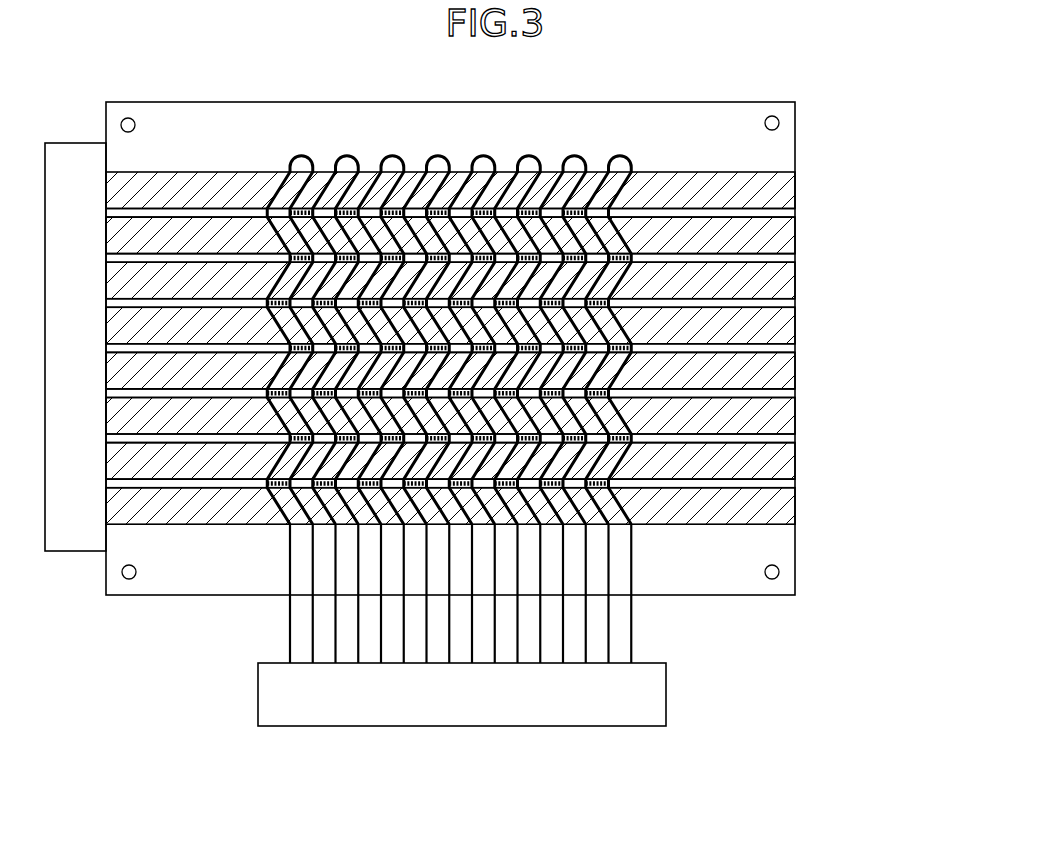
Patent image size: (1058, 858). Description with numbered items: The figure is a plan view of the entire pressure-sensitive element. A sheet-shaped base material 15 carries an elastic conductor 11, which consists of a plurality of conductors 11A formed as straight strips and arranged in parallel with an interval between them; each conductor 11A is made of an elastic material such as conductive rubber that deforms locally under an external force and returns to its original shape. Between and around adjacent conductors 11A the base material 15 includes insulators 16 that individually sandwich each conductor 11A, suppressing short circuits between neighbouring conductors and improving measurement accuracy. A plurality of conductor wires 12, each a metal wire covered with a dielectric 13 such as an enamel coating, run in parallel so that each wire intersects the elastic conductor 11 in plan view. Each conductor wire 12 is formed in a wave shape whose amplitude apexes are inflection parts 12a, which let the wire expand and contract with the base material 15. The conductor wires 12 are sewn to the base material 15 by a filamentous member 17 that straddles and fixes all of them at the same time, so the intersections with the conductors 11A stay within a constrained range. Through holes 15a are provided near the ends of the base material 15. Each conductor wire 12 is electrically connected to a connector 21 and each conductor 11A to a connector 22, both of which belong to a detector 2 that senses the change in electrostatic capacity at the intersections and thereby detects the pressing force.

The detector 2 is at (355, 491).
The elastic conductor 11 is at (535, 348).
The conductor 11A is at (786, 194).
The conductor wire 12 is at (421, 358).
The inflection part 12a is at (243, 300).
The dielectric 13 is at (337, 632).
The base material 15 is at (705, 117).
The through hole 15a is at (126, 117).
The insulator 16 is at (782, 151).
The filamentous member 17 is at (598, 168).
The connector 21 is at (267, 698).
The connector 22 is at (68, 540).